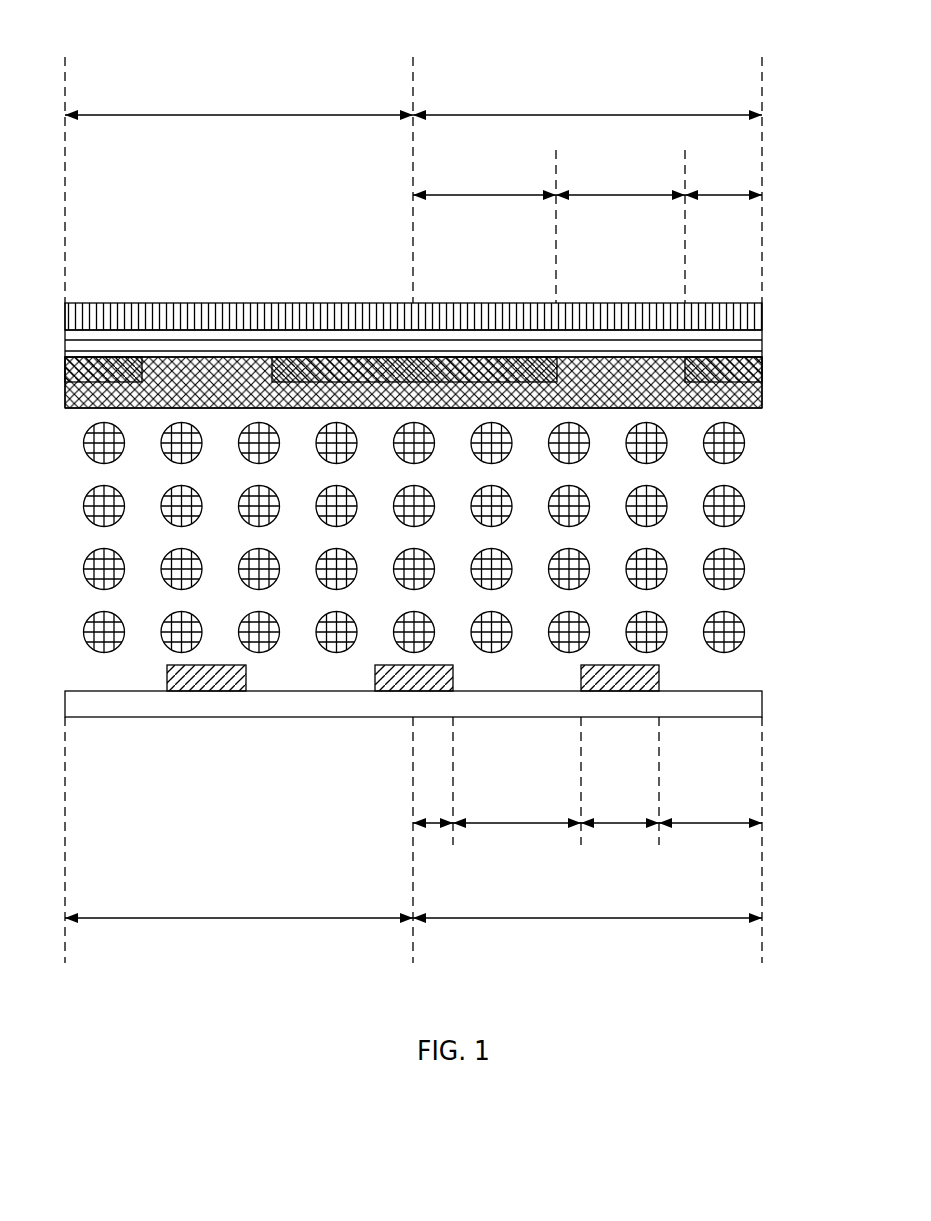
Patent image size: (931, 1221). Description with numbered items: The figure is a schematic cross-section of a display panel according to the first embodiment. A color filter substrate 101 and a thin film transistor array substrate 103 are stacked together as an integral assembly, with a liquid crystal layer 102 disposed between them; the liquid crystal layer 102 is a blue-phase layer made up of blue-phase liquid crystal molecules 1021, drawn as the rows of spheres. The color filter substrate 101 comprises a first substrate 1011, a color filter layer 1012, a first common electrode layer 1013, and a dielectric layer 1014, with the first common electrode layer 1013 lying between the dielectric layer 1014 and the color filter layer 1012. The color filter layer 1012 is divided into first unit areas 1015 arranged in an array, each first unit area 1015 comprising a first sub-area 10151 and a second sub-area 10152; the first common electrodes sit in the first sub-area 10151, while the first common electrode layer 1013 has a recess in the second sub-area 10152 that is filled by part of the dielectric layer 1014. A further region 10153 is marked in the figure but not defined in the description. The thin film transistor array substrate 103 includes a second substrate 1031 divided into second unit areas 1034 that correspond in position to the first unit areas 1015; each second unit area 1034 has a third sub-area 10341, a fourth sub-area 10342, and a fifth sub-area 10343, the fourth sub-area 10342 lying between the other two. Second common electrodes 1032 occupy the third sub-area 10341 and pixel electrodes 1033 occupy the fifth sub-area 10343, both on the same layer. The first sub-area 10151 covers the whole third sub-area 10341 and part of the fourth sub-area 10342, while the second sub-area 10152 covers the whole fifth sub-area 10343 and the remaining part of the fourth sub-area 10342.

The color filter substrate 101 is at (451, 325).
The first substrate 1011 is at (193, 303).
The color filter layer 1012 is at (270, 330).
The first common electrode layer 1013 is at (374, 357).
The dielectric layer 1014 is at (607, 357).
The first unit area 1015 is at (218, 113).
The first sub-area 10151 is at (470, 193).
The second sub-area 10152 is at (599, 193).
The third sub-width of period 10153 is at (715, 193).
The liquid crystal layer 102 is at (458, 592).
The blue-phase liquid crystal molecules 1021 is at (104, 653).
The thin film transistor array substrate 103 is at (451, 719).
The second substrate 1031 is at (310, 717).
The second common electrodes 1032 is at (396, 691).
The pixel electrodes 1033 is at (220, 691).
The second unit area 1034 is at (248, 920).
The third sub-area 10341 is at (435, 825).
The fourth sub-area 10342 is at (518, 825).
The fifth sub-area 10343 is at (620, 825).